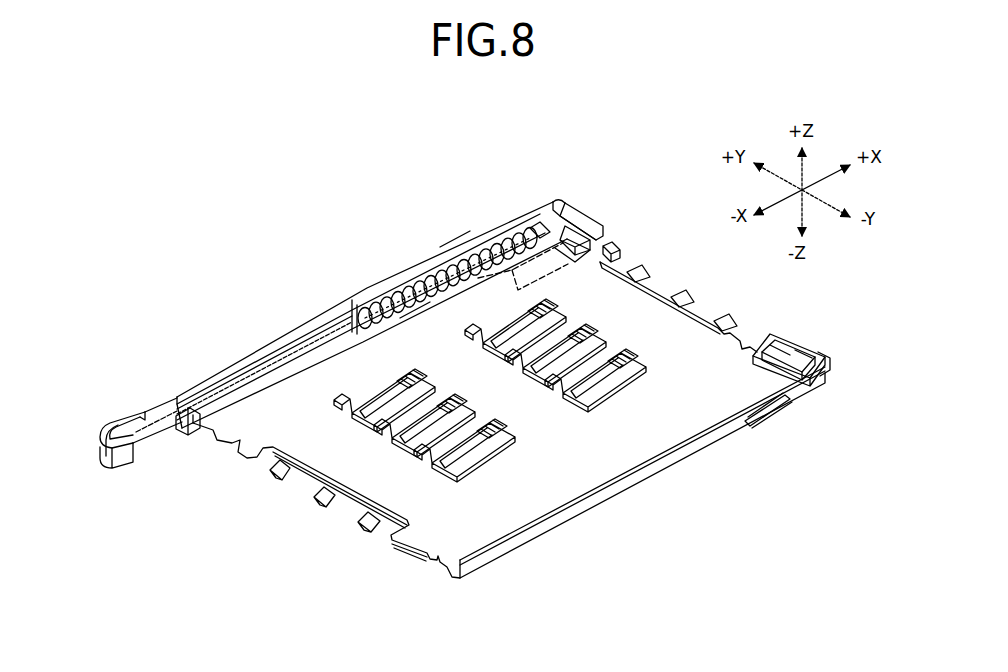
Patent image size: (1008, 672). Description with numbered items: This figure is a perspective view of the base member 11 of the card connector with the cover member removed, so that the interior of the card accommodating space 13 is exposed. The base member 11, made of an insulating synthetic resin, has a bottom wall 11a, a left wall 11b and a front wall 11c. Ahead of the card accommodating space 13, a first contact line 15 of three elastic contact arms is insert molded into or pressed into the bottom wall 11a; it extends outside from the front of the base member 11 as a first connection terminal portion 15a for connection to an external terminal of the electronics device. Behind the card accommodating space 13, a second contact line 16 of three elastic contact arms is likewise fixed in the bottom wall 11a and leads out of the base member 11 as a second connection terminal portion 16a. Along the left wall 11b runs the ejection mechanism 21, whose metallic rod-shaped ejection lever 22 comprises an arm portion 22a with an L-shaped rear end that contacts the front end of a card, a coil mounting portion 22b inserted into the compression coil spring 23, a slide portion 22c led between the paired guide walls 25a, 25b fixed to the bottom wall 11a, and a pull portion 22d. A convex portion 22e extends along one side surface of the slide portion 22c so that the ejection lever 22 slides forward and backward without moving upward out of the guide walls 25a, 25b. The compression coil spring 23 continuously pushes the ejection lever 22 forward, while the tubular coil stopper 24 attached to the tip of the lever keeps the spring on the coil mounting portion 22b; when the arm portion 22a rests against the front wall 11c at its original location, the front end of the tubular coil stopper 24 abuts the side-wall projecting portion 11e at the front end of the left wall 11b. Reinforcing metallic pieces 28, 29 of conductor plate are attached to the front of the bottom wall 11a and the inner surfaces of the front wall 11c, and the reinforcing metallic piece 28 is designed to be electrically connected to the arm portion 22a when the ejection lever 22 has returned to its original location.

The base member 11 is at (604, 512).
The bottom wall 11a is at (712, 413).
The left wall 11b is at (452, 251).
The front wall 11c is at (618, 248).
The side-wall projecting portion 11e is at (553, 200).
The card accommodating space 13 is at (540, 502).
The first contact line 15 is at (591, 395).
The first connection terminal portion 15a is at (646, 271).
The second contact line 16 is at (463, 467).
The second connection terminal portion 16a is at (270, 478).
The ejection mechanism 21 is at (308, 321).
The ejection lever 22 is at (120, 472).
The arm portion 22a is at (578, 212).
The coil mounting portion 22b is at (421, 322).
The slide portion 22c is at (143, 418).
The pull portion 22d is at (118, 418).
The convex portion 22e is at (186, 440).
The compression coil spring 23 is at (486, 240).
The tubular coil stopper 24 is at (524, 214).
The guide wall 25a is at (285, 341).
The guide wall 25b is at (238, 380).
The reinforcing metallic piece 28 is at (594, 228).
The reinforcing metallic piece 29 is at (793, 340).